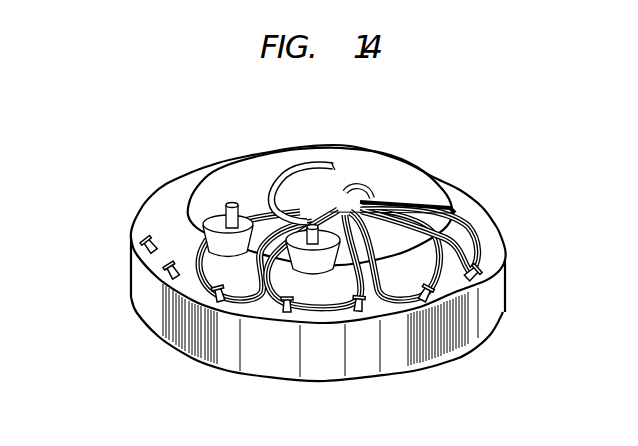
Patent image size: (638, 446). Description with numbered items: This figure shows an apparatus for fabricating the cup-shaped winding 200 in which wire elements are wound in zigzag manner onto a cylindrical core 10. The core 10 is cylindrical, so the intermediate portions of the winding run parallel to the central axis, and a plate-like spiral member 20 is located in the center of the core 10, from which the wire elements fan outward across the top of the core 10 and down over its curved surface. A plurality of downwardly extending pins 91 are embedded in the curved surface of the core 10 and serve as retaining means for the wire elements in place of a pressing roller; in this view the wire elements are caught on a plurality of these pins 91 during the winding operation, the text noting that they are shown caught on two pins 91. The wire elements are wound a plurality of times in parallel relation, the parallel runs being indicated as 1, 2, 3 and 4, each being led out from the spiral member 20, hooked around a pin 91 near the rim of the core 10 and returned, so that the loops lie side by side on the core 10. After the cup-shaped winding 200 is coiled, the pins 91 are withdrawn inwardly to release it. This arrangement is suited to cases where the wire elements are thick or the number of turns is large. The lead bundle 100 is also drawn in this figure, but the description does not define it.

The cup-shaped winding 200 is at (127, 213).
The core 10 is at (383, 170).
The spiral member 20 is at (293, 167).
The wire lead bundles 100 is at (472, 228).
The pins 91 is at (168, 268).
The wire element 1 is at (460, 290).
The wire element 2 is at (403, 300).
The wire element 3 is at (325, 320).
The wire element 4 is at (248, 318).